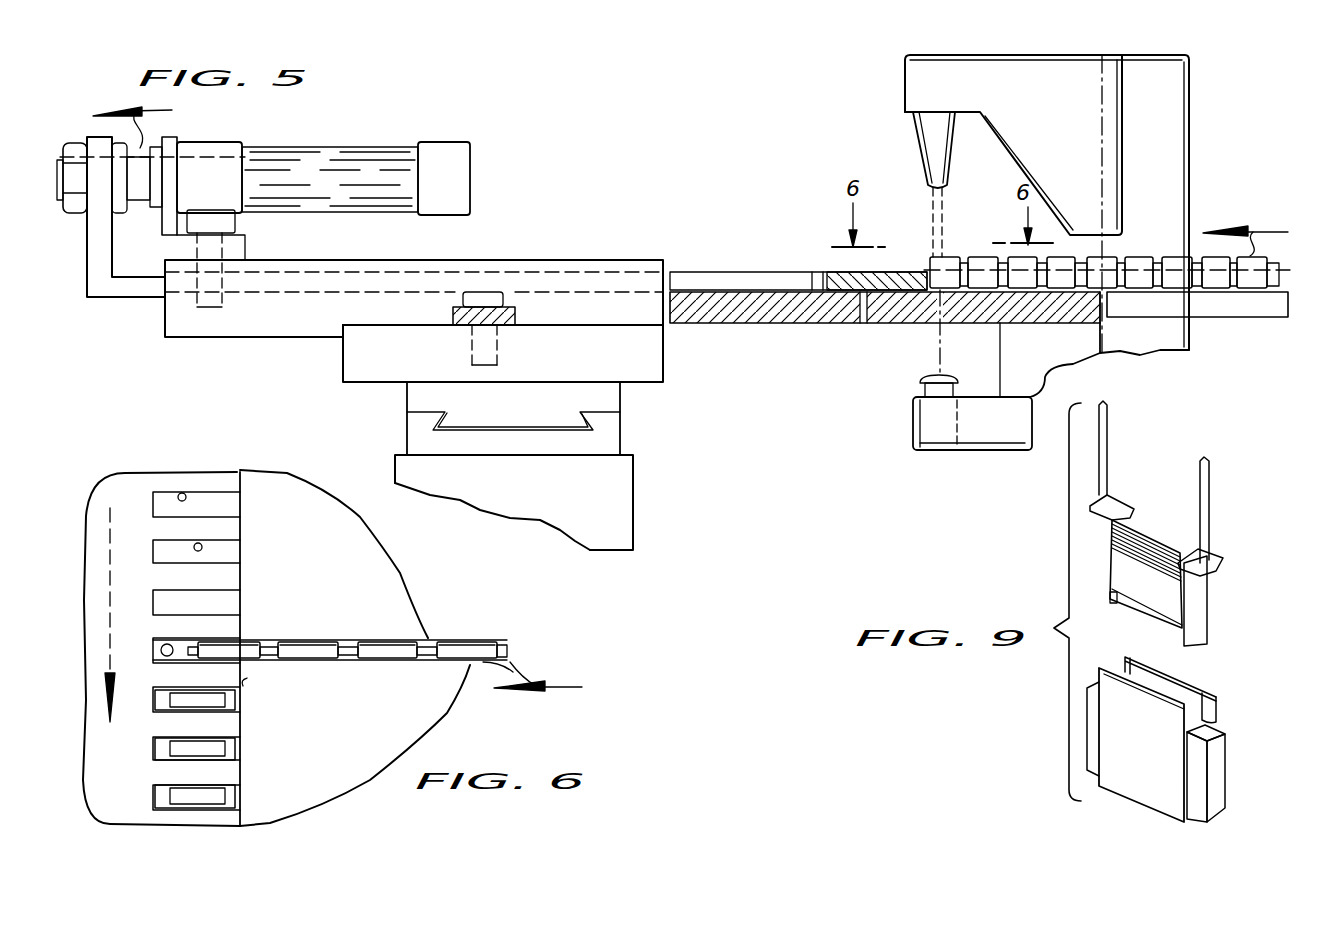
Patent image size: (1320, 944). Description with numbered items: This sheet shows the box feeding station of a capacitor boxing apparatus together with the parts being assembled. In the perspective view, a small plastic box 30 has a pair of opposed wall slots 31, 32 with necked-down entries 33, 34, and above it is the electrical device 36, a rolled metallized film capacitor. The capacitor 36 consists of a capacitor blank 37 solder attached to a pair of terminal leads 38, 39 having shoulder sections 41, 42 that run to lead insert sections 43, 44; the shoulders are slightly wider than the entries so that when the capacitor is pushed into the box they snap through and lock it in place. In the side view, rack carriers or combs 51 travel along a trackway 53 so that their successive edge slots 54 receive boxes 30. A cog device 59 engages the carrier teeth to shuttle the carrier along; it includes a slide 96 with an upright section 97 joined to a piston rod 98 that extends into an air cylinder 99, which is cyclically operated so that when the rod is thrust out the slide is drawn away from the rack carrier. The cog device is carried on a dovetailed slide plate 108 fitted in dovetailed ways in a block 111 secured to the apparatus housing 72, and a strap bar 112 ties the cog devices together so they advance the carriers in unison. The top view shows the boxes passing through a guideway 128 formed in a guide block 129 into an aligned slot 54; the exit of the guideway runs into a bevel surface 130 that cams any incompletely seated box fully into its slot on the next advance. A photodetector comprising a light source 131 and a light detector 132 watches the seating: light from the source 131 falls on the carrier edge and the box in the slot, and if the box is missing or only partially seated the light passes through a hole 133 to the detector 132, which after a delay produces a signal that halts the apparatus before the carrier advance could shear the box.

In FIG. 5, the plastic box 30 is at (1017, 262).
In FIG. 6, the plastic box 30 is at (458, 640).
In FIG. 9, the plastic box 30 is at (1173, 722).
In FIG. 9, the wall slot 31 is at (1117, 670).
In FIG. 9, the wall slot 32 is at (1200, 718).
In FIG. 9, the necked-down entry 33 is at (1135, 634).
In FIG. 9, the necked-down entry 34 is at (1202, 697).
In FIG. 9, the electrical device 36 is at (1160, 475).
In FIG. 9, the rolled metallized film capacitor blank 37 is at (1148, 535).
In FIG. 9, the terminal lead 38 is at (1112, 598).
In FIG. 9, the terminal lead 39 is at (1200, 610).
In FIG. 9, the shoulder section 41 is at (1103, 522).
In FIG. 9, the shoulder section 42 is at (1216, 562).
In FIG. 9, the lead insert section 43 is at (1108, 430).
In FIG. 9, the lead insert section 44 is at (1210, 486).
In FIG. 5, the rack carrier 51 is at (863, 293).
In FIG. 6, the rack carrier 51 is at (128, 486).
In FIG. 5, the trackway 53 is at (723, 325).
In FIG. 6, the edge slot 54 is at (200, 543).
In FIG. 5, the cog device 59 is at (604, 186).
In FIG. 5, the apparatus housing 72 is at (627, 490).
In FIG. 5, the slide 96 is at (718, 272).
In FIG. 5, the upright section 97 is at (113, 262).
In FIG. 5, the piston rod 98 is at (141, 150).
In FIG. 5, the air cylinder 99 is at (333, 147).
In FIG. 5, the dovetailed slide plate 108 is at (613, 395).
In FIG. 5, the block 111 is at (613, 430).
In FIG. 5, the strap bar 112 is at (513, 305).
In FIG. 6, the guideway 128 is at (345, 662).
In FIG. 6, the guide block 129 is at (340, 786).
In FIG. 6, the bevel surface 130 is at (247, 678).
In FIG. 5, the light source 131 is at (932, 156).
In FIG. 5, the light detector 132 is at (958, 390).
In FIG. 5, the hole 133 is at (928, 323).
In FIG. 6, the hole 133 is at (162, 643).